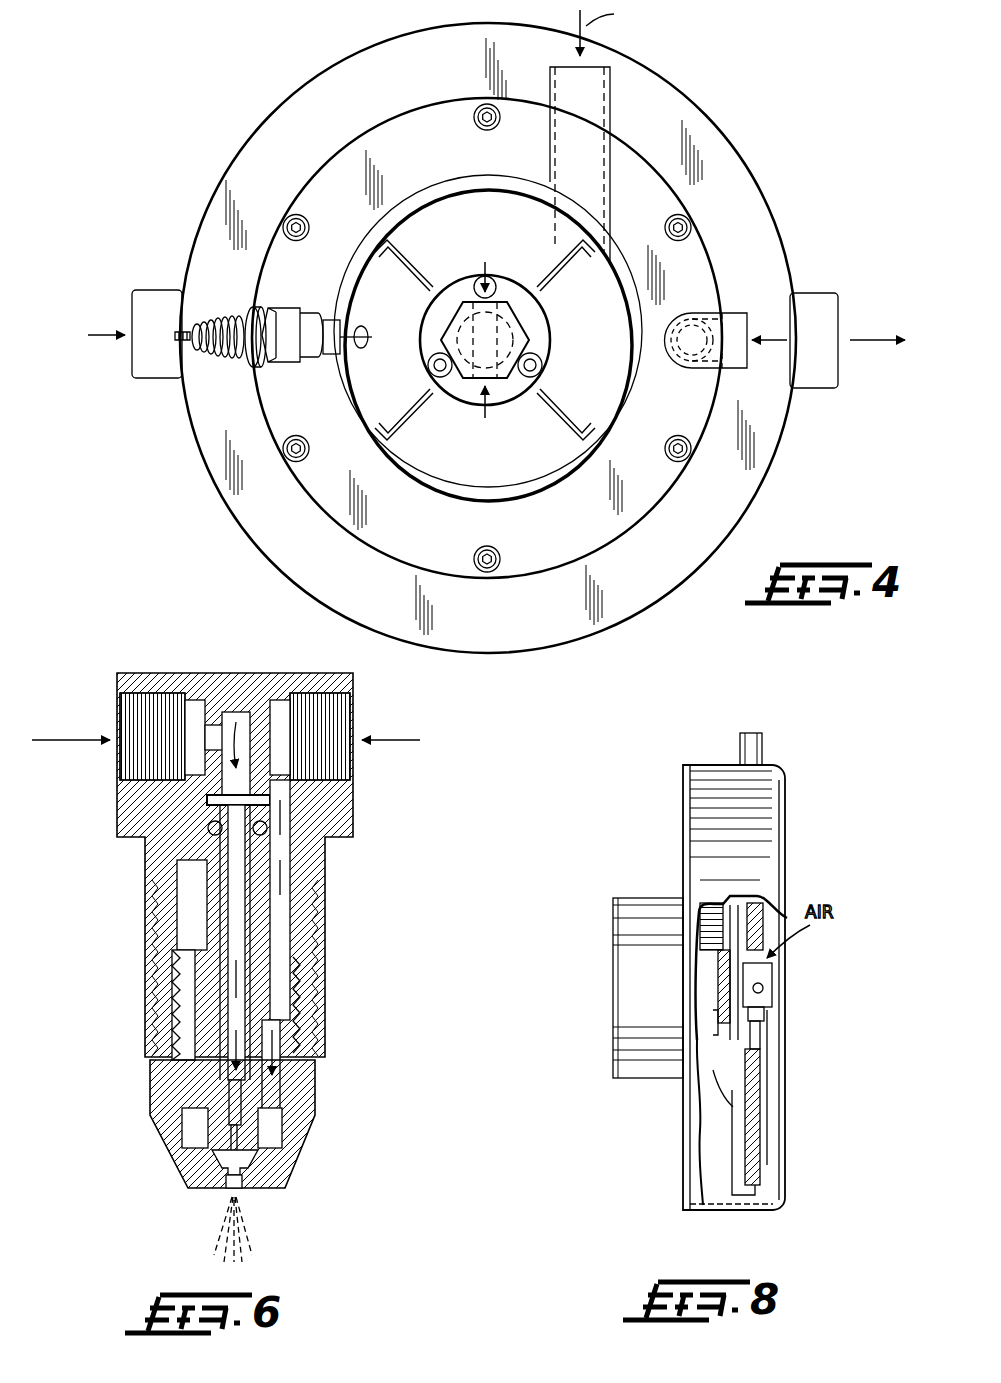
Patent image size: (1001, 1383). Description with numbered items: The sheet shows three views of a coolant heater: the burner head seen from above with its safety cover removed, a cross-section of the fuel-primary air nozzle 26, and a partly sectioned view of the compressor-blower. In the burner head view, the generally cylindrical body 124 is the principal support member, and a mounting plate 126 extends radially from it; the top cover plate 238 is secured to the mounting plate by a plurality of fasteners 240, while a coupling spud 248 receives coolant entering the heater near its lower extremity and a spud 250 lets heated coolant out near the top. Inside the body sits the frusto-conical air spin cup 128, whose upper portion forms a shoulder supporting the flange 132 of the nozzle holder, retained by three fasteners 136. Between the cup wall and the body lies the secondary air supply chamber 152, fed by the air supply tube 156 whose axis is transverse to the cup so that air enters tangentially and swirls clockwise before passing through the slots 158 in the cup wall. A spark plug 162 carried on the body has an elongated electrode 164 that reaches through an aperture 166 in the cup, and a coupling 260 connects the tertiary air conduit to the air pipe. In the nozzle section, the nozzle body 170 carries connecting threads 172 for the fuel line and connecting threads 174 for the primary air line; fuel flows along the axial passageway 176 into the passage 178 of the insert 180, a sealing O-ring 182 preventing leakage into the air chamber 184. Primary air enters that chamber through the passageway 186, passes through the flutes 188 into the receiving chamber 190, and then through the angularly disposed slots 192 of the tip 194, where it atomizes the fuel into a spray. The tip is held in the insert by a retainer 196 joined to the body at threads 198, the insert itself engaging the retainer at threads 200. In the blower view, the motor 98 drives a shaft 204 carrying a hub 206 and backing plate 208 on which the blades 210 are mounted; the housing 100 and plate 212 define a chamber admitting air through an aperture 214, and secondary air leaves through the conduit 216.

In FIG. 4, the fuel nozzle assembly 26 is at (460, 300).
In FIG. 6, the fuel nozzle assembly 26 is at (120, 665).
In FIG. 8, the motor 98 is at (640, 912).
In FIG. 8, the housing 100 is at (755, 808).
In FIG. 4, the body 124 is at (622, 410).
In FIG. 4, the mounting plate 126 is at (652, 490).
In FIG. 4, the air spin cup 128 is at (436, 462).
In FIG. 4, the flange 132 is at (530, 306).
In FIG. 4, the fasteners 136 is at (541, 362).
In FIG. 4, the secondary air supply chamber 152 is at (537, 215).
In FIG. 4, the air supply tube 156 is at (612, 92).
In FIG. 4, the slots 158 is at (560, 410).
In FIG. 4, the spark plug 162 is at (287, 312).
In FIG. 4, the elongated electrode 164 is at (345, 335).
In FIG. 4, the aperture 166 is at (364, 348).
In FIG. 6, the nozzle body 170 is at (340, 806).
In FIG. 6, the connecting threads 172 is at (135, 762).
In FIG. 6, the connecting threads 174 is at (345, 700).
In FIG. 6, the passageway 176 is at (240, 715).
In FIG. 6, the passage 178 is at (235, 905).
In FIG. 6, the insert 180 is at (215, 878).
In FIG. 6, the sealing O-ring 182 is at (212, 832).
In FIG. 6, the air chamber 184 is at (286, 937).
In FIG. 6, the passageway 186 is at (285, 830).
In FIG. 6, the flutes 188 is at (268, 978).
In FIG. 6, the receiving chamber 190 is at (272, 1122).
In FIG. 6, the angularly disposed slots 192 is at (262, 1188).
In FIG. 6, the tip 194 is at (215, 1160).
In FIG. 6, the retainer 196 is at (165, 1085).
In FIG. 6, the threads 198 is at (170, 993).
In FIG. 6, the threads 200 is at (295, 1018).
In FIG. 8, the shaft 204 is at (772, 983).
In FIG. 8, the hub 206 is at (764, 1022).
In FIG. 8, the backing plate 208 is at (760, 1040).
In FIG. 8, the blades 210 is at (752, 1133).
In FIG. 8, the plate 212 is at (733, 1108).
In FIG. 8, the aperture 214 is at (783, 920).
In FIG. 8, the conduit 216 is at (765, 745).
In FIG. 4, the top cover plate 238 is at (552, 626).
In FIG. 4, the fasteners 240 is at (498, 550).
In FIG. 4, the coupling spud 248 is at (155, 375).
In FIG. 4, the spud 250 is at (815, 388).
In FIG. 4, the coupling 260 is at (735, 325).